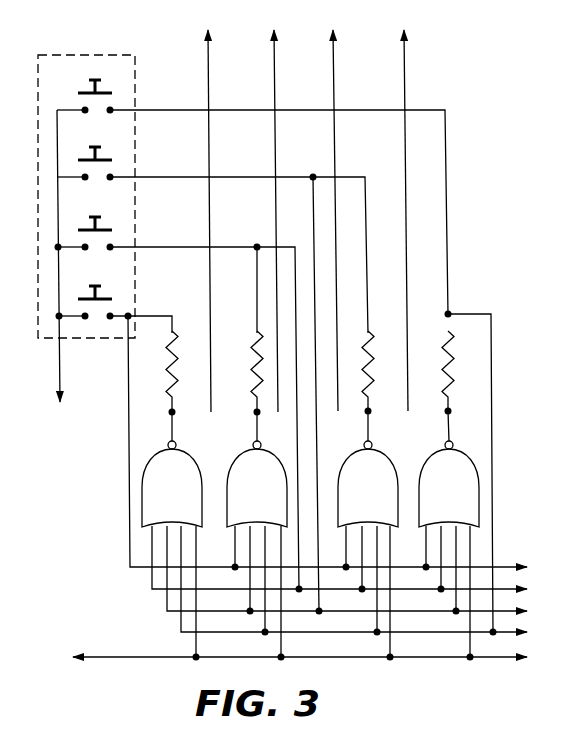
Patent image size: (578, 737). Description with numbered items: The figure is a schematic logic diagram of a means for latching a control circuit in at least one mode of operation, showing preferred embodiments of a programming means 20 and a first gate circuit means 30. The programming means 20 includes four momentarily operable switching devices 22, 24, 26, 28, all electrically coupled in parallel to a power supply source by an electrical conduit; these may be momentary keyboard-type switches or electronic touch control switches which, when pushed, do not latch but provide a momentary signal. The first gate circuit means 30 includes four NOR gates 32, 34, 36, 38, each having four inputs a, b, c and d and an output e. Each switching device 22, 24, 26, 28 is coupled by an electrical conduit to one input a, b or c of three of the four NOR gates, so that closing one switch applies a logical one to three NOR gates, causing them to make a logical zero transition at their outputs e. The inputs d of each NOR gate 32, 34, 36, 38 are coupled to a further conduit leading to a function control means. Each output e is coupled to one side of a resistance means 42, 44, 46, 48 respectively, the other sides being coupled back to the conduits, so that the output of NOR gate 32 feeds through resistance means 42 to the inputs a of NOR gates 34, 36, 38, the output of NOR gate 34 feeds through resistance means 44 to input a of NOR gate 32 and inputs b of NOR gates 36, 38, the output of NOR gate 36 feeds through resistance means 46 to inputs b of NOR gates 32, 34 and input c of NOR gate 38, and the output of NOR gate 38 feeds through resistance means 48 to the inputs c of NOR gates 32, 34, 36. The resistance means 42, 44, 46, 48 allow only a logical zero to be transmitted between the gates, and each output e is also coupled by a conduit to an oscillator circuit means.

The programming means 20 is at (109, 53).
The momentarily operable switching device 22 is at (118, 100).
The momentarily operable switching device 24 is at (120, 165).
The momentarily operable switching device 26 is at (120, 235).
The momentarily operable switching device 28 is at (120, 302).
The first gate circuit means 30 is at (487, 155).
The NOR gate 32 is at (189, 470).
The NOR gate 34 is at (275, 470).
The NOR gate 36 is at (348, 464).
The NOR gate 38 is at (429, 464).
The resistance means 42 is at (176, 360).
The resistance means 44 is at (255, 366).
The resistance means 46 is at (374, 353).
The resistance means 48 is at (447, 380).